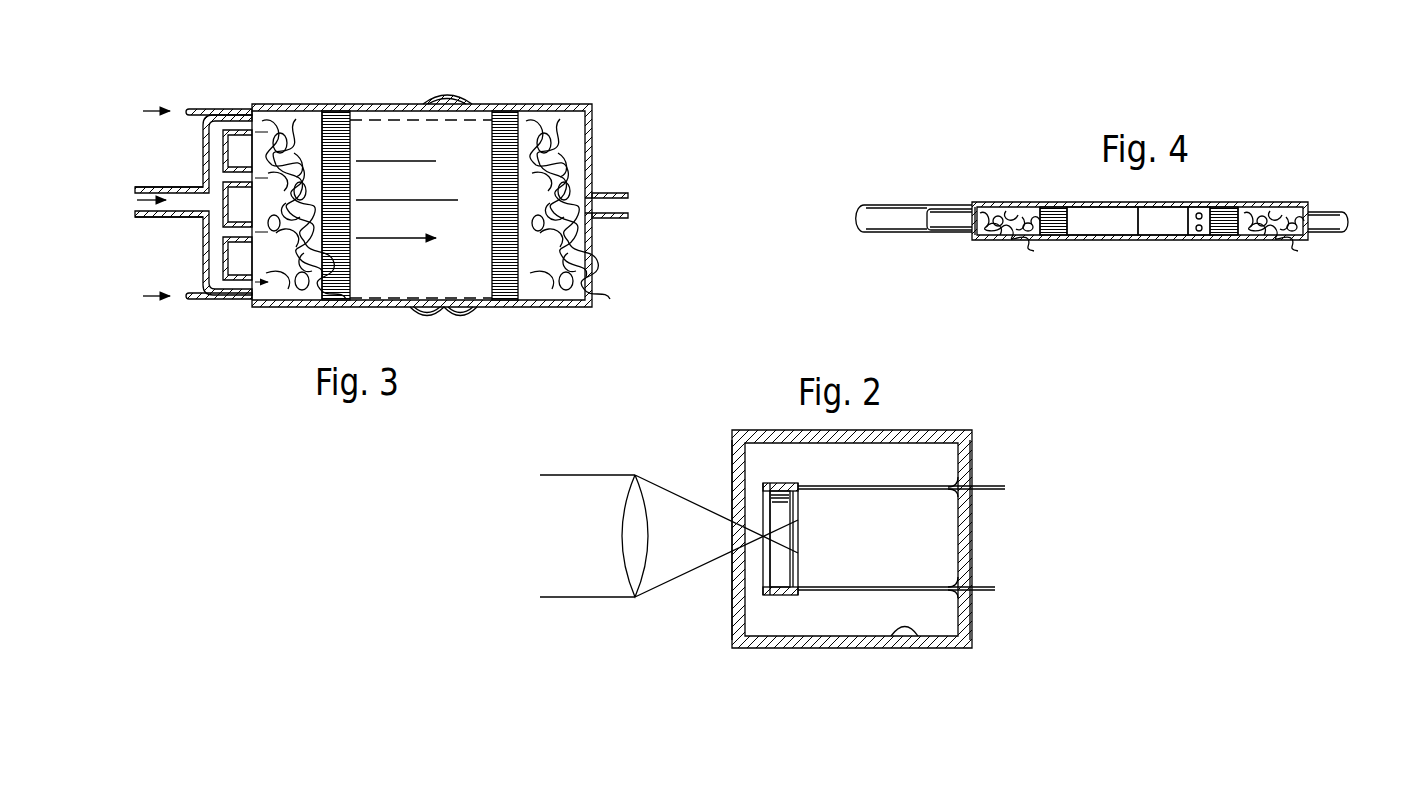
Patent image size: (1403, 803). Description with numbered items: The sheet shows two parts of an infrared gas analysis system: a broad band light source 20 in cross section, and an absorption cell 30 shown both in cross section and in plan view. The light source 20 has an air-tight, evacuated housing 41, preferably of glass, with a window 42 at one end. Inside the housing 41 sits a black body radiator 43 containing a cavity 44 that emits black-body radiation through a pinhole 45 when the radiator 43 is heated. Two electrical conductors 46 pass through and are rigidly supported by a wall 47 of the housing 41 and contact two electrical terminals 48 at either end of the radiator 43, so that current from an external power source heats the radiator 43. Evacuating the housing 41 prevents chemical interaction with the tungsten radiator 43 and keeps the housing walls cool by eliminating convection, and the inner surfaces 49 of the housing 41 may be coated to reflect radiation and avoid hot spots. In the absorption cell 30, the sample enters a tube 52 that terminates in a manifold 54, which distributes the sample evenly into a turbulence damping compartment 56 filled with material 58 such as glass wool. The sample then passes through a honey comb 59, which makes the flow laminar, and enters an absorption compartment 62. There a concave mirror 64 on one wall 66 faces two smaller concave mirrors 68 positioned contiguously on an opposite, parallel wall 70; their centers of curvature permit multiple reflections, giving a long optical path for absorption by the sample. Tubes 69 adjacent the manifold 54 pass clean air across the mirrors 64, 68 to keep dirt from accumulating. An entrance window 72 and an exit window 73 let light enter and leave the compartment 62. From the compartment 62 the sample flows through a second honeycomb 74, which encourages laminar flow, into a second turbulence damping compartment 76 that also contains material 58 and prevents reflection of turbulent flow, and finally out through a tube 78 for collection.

In FIG. 2, the broad band light source 20 is at (1032, 442).
In FIG. 3, the gas filter device 30 is at (462, 52).
In FIG. 4, the gas filter device 30 is at (1214, 328).
In FIG. 2, the housing 41 is at (960, 436).
In FIG. 2, the window 42 is at (732, 603).
In FIG. 2, the black body radiator 43 is at (800, 569).
In FIG. 2, the cavity 44 is at (782, 582).
In FIG. 2, the pinhole 45 is at (763, 537).
In FIG. 2, the electrical conductors 46 is at (913, 490).
In FIG. 2, the wall 47 is at (978, 549).
In FIG. 2, the electrical terminals 48 is at (800, 485).
In FIG. 2, the inner surfaces 49 is at (915, 638).
In FIG. 3, the tube 52 is at (178, 187).
In FIG. 4, the tube 52 is at (885, 208).
In FIG. 3, the manifold 54 is at (219, 282).
In FIG. 4, the manifold 54 is at (936, 214).
In FIG. 3, the turbulence damping compartment 56 is at (303, 240).
In FIG. 4, the turbulence damping compartment 56 is at (1019, 212).
In FIG. 3, the material 58 is at (286, 140).
In FIG. 4, the material 58 is at (1002, 226).
In FIG. 3, the honey comb 59 is at (332, 130).
In FIG. 4, the honey comb 59 is at (1061, 232).
In FIG. 3, the absorption compartment 62 is at (440, 275).
In FIG. 4, the absorption compartment 62 is at (1108, 228).
In FIG. 3, the concave mirror 64 is at (462, 100).
In FIG. 4, the concave mirror 64 is at (1151, 228).
In FIG. 3, the wall 66 is at (378, 105).
In FIG. 4, the wall 66 is at (1140, 221).
In FIG. 3, the concave mirrors 68 is at (458, 315).
In FIG. 3, the tubes 69 is at (198, 108).
In FIG. 3, the wall 70 is at (393, 306).
In FIG. 4, the entrance window 72 is at (1206, 212).
In FIG. 4, the exit window 73 is at (1196, 238).
In FIG. 3, the second honeycomb 74 is at (506, 294).
In FIG. 4, the second honeycomb 74 is at (1228, 232).
In FIG. 3, the second turbulence damping compartment 76 is at (556, 292).
In FIG. 4, the second turbulence damping compartment 76 is at (1270, 212).
In FIG. 3, the tube 78 is at (618, 196).
In FIG. 4, the tube 78 is at (1330, 218).